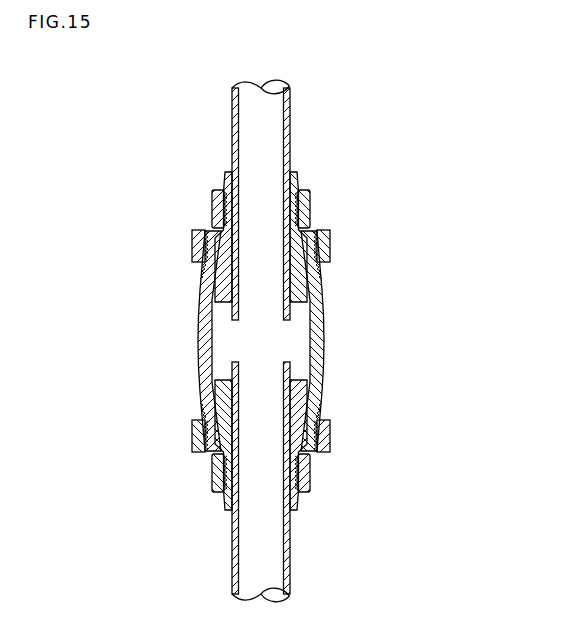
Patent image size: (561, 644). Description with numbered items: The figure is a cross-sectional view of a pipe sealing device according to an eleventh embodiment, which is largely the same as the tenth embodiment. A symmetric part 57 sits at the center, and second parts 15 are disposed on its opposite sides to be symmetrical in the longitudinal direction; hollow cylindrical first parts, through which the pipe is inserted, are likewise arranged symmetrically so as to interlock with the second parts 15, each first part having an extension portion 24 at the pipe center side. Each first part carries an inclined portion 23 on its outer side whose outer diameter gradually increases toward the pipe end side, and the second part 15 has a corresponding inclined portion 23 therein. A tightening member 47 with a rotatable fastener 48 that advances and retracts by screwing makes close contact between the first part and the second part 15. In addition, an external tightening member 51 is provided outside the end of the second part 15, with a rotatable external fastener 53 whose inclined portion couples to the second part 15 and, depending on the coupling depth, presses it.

The second part 15 is at (198, 280).
The inclined portion 23 is at (323, 425).
The extension portion 24 is at (213, 170).
The tightening member 47 is at (303, 185).
The rotatable fastener 48 is at (187, 192).
The external tightening member 51 is at (322, 268).
The external fastener 53 is at (333, 245).
The symmetric part 57 is at (323, 345).